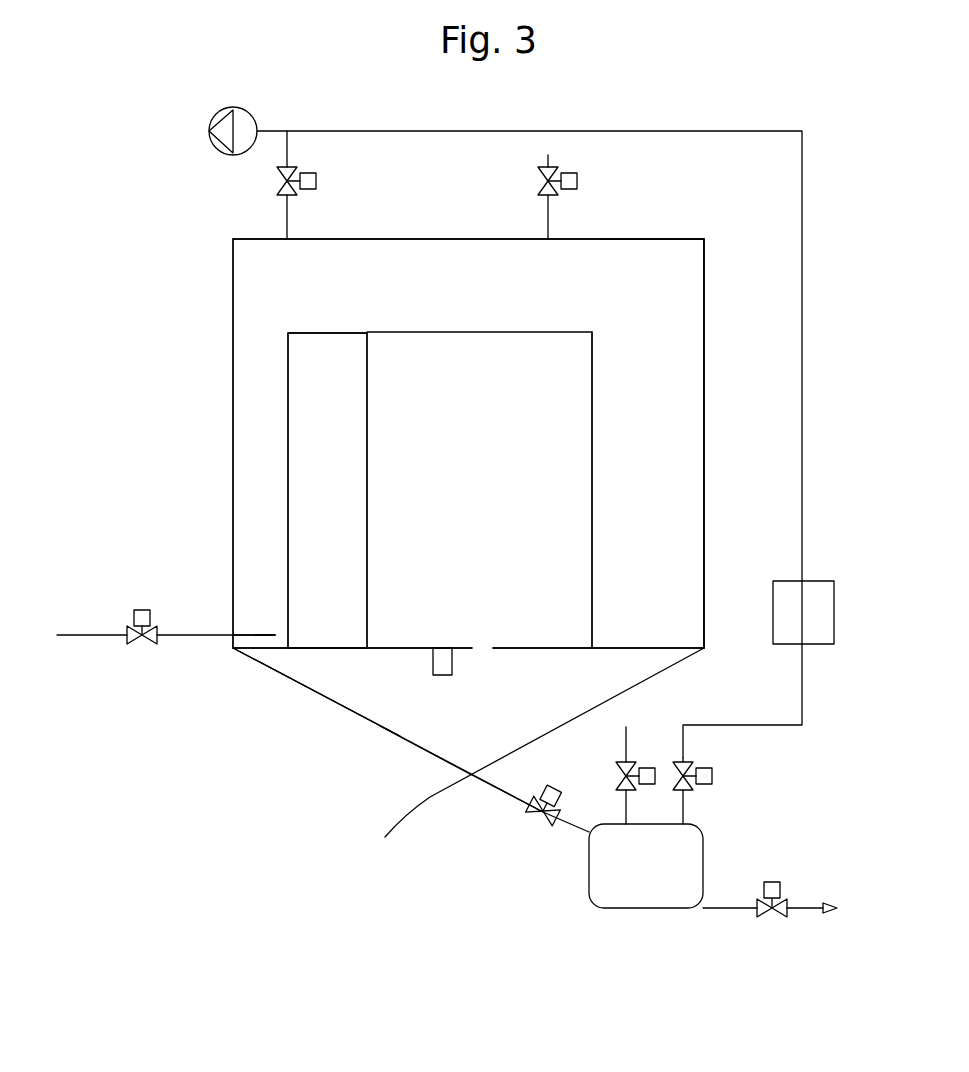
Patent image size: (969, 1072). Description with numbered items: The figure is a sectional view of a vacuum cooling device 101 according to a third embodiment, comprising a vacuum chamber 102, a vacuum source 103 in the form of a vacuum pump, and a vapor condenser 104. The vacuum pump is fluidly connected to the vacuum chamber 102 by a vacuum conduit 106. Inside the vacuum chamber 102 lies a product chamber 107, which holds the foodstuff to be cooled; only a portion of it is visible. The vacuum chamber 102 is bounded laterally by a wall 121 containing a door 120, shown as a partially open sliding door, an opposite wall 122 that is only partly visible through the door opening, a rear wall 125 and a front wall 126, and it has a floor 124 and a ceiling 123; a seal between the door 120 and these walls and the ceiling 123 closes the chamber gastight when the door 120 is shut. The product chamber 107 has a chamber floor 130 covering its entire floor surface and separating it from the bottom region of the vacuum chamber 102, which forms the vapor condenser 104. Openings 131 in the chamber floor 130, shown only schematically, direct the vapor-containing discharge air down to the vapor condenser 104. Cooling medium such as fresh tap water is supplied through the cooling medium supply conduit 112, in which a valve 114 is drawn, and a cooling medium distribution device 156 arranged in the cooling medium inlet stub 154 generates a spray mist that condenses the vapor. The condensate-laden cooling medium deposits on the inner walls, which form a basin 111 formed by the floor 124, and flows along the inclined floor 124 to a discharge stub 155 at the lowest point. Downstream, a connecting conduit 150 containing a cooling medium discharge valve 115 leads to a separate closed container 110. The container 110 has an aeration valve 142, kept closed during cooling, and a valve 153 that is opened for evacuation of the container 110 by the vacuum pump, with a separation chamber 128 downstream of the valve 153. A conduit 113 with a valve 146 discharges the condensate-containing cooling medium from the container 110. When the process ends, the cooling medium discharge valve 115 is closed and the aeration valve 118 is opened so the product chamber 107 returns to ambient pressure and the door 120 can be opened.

The vacuum cooling device 101 is at (213, 370).
The vacuum chamber 102 is at (247, 269).
The vacuum source 103 is at (218, 113).
The vapor condenser 104 is at (343, 710).
The vacuum conduit 106 is at (283, 212).
The product chamber 107 is at (348, 489).
The container 110 is at (620, 898).
The basin 111 is at (408, 748).
The cooling medium supply conduit 112 is at (65, 640).
The conduit 113 is at (708, 908).
The inlet valve 114 is at (135, 610).
The cooling medium discharge valve 115 is at (528, 812).
The aeration valve 118 is at (540, 196).
The door 120 is at (572, 432).
The wall 121 is at (632, 493).
The opposite wall 122 is at (345, 517).
The ceiling 123 is at (660, 239).
The floor 124 is at (388, 730).
The rear wall 125 is at (233, 444).
The front wall 126 is at (703, 373).
The separation chamber 128 is at (822, 609).
The chamber floor 130 is at (312, 649).
The openings 131 is at (471, 647).
The aeration valve 142 is at (618, 783).
The valve 146 is at (760, 918).
The connecting conduit 150 is at (493, 787).
The valve 153 is at (712, 772).
The cooling medium inlet stub 154 is at (233, 640).
The discharge stub 155 is at (527, 765).
The cooling medium distribution device 156 is at (270, 637).